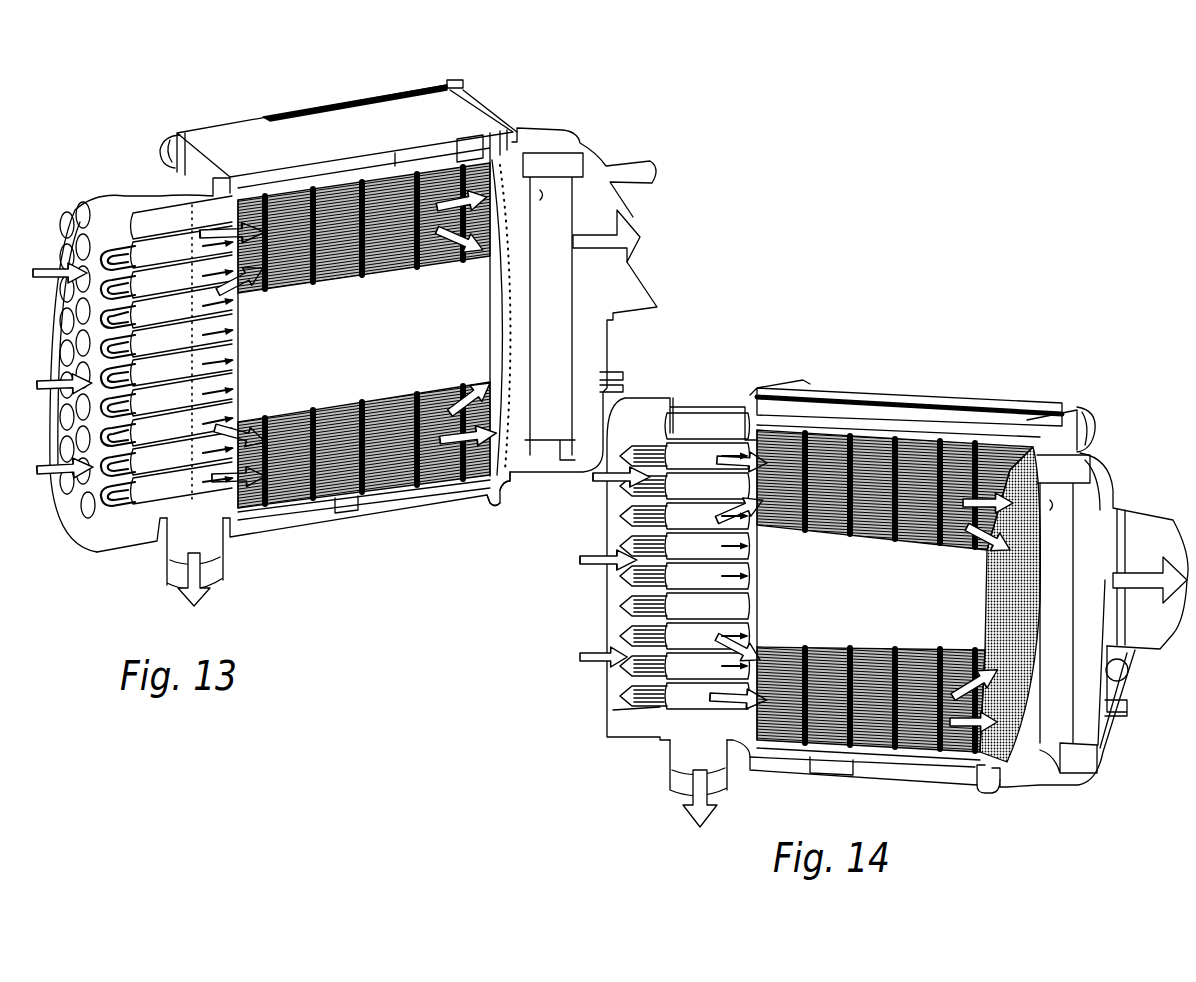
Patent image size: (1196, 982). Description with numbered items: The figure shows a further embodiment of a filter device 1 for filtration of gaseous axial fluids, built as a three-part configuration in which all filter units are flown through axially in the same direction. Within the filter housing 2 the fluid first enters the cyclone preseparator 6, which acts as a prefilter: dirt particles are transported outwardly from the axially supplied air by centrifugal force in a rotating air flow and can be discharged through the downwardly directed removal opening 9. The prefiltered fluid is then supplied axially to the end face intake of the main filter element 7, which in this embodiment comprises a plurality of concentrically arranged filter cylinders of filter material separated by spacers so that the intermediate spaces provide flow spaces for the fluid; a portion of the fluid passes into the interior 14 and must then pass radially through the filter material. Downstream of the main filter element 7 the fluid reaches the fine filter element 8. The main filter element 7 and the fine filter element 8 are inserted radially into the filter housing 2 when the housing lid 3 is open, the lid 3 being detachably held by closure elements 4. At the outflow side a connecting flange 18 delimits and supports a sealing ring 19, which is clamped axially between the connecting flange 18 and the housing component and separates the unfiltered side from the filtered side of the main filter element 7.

In FIG. 13, the filter device 1 is at (377, 315).
In FIG. 14, the filter device 1 is at (897, 536).
In FIG. 13, the filter housing 2 is at (267, 530).
In FIG. 14, the filter housing 2 is at (767, 757).
In FIG. 13, the housing lid 3 is at (237, 137).
In FIG. 14, the housing lid 3 is at (838, 395).
In FIG. 13, the closure elements 4 is at (160, 148).
In FIG. 14, the closure elements 4 is at (1087, 420).
In FIG. 13, the cyclone preseparator 6 is at (100, 557).
In FIG. 14, the cyclone preseparator 6 is at (607, 723).
In FIG. 13, the main filter element 7 is at (383, 497).
In FIG. 14, the main filter element 7 is at (883, 760).
In FIG. 13, the fine filter element 8 is at (543, 443).
In FIG. 14, the fine filter element 8 is at (1040, 753).
In FIG. 13, the removal opening 9 is at (162, 570).
In FIG. 14, the removal opening 9 is at (670, 777).
In FIG. 13, the interior 14 is at (362, 364).
In FIG. 14, the interior 14 is at (867, 612).
In FIG. 13, the connecting flange 18 is at (483, 497).
In FIG. 14, the connecting flange 18 is at (977, 777).
In FIG. 13, the sealing ring 19 is at (493, 497).
In FIG. 14, the sealing ring 19 is at (990, 777).